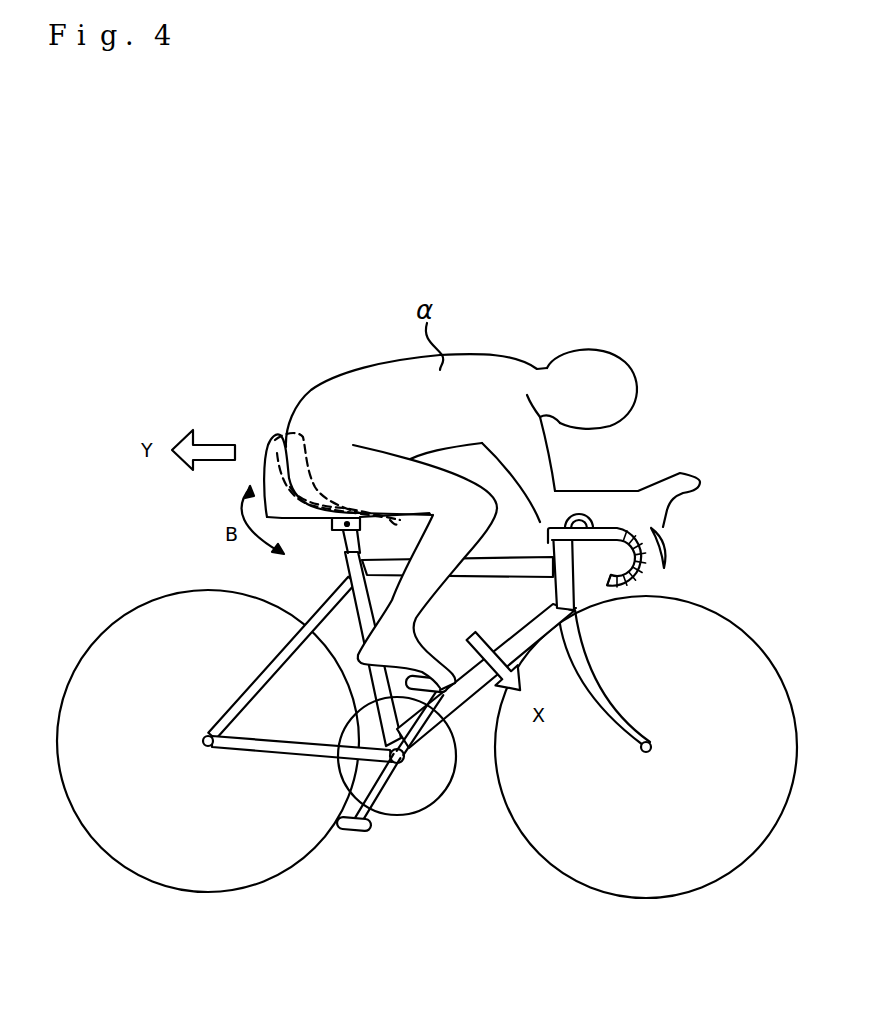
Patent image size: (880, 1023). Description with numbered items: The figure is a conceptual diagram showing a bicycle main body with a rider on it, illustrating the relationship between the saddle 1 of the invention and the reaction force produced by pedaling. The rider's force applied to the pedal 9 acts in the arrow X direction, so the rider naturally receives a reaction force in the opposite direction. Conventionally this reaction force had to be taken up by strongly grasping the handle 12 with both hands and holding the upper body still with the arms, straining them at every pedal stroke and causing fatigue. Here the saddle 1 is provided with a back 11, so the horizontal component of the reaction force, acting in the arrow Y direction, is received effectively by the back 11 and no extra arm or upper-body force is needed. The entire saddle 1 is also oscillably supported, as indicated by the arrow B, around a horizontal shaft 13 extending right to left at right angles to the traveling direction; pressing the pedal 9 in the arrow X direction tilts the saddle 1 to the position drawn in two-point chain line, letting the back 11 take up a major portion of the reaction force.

The saddle 1 is at (255, 472).
The pedal 9 is at (442, 704).
The back 11 is at (270, 440).
The handle 12 is at (701, 480).
The horizontal shaft 13 is at (331, 531).